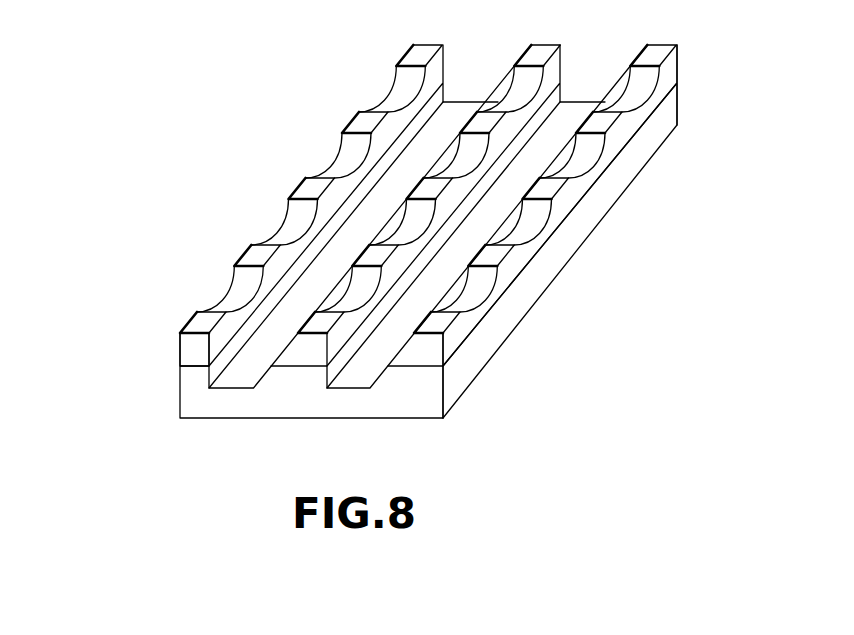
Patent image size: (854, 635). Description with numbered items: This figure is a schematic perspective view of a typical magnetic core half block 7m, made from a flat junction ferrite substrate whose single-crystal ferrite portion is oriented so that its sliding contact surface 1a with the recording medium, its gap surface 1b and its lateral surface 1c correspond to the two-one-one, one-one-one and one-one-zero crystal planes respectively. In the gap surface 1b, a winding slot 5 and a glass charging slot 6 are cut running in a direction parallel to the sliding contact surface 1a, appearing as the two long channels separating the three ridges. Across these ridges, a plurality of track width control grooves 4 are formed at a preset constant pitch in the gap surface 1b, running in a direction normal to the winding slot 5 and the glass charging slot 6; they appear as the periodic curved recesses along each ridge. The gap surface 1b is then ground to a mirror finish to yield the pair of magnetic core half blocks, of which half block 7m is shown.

The magnetic core half block 7m is at (272, 145).
The sliding contact surface 1a is at (450, 338).
The gap surface 1b is at (196, 314).
The lateral surface 1c is at (192, 348).
The track width control groove 4 is at (665, 83).
The winding slot 5 is at (350, 389).
The glass charging slot 6 is at (232, 389).